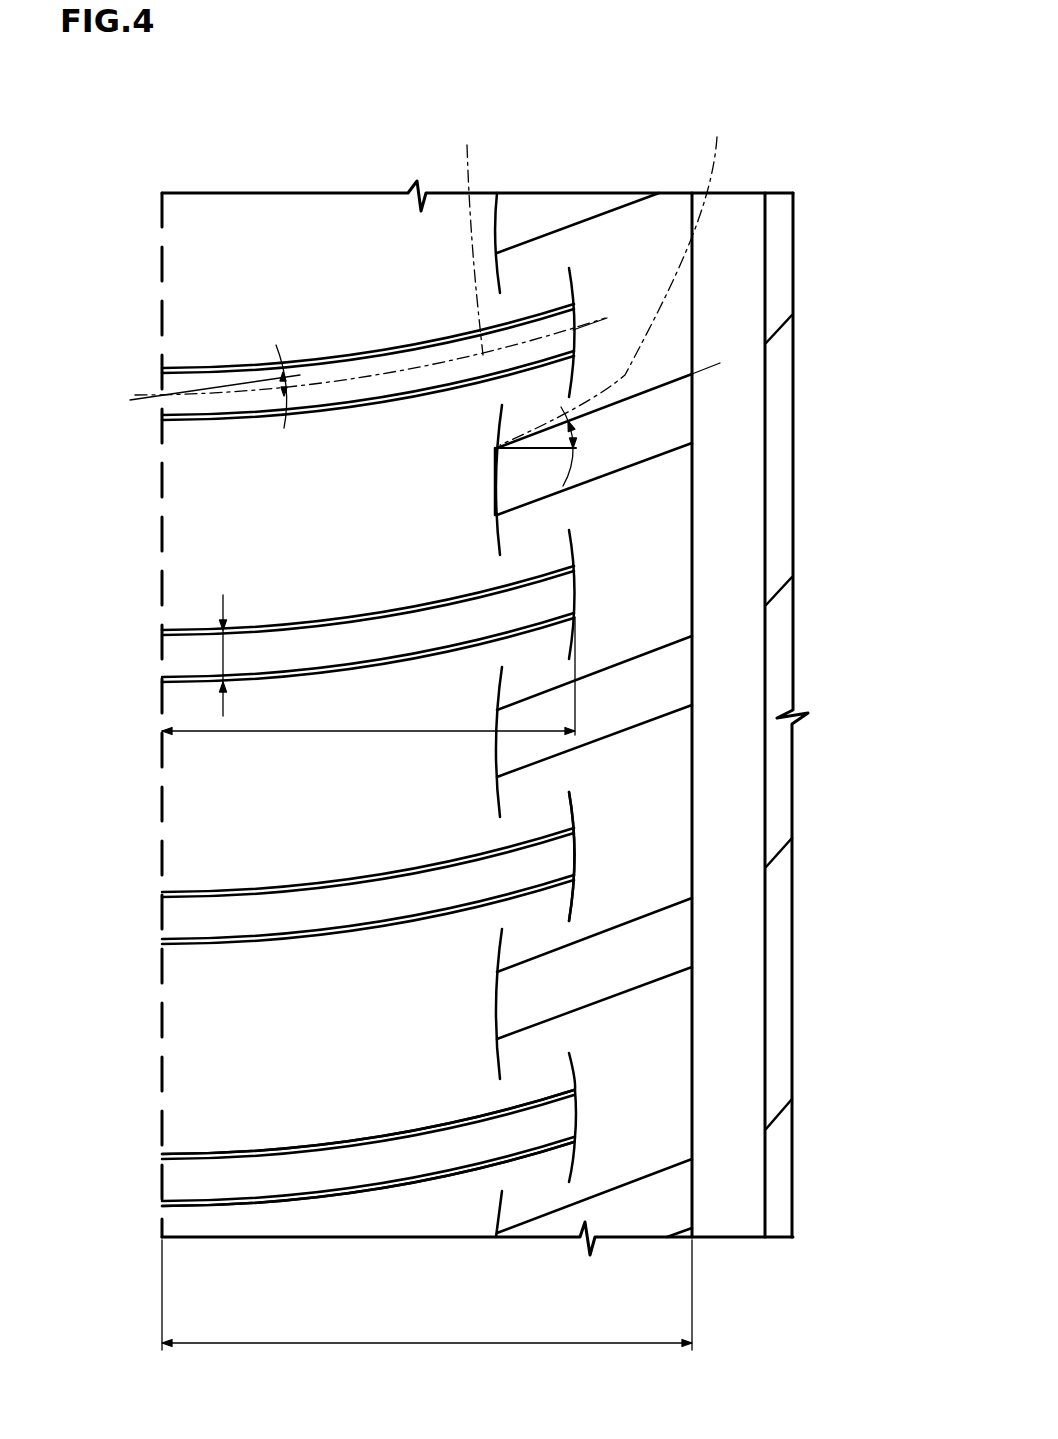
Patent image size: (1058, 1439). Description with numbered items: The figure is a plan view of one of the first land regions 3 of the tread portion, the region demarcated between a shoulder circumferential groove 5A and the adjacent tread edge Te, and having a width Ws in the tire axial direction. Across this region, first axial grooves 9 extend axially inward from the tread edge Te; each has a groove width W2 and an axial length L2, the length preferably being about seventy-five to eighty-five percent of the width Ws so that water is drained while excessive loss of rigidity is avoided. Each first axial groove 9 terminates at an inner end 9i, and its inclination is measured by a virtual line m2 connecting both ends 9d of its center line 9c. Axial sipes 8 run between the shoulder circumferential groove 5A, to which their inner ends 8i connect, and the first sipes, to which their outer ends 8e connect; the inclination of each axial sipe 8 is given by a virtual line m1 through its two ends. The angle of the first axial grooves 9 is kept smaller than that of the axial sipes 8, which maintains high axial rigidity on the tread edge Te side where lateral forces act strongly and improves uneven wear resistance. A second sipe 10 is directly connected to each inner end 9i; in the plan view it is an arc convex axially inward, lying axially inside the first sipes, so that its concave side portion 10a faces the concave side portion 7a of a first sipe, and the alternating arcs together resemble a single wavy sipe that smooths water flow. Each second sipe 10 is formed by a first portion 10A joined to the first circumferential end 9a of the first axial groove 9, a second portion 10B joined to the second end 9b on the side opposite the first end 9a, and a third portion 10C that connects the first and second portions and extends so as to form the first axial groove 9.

The first land region 3 is at (760, 130).
The tread edge Te is at (160, 212).
The shoulder circumferential groove 5A is at (728, 1212).
The first axial groove 9 is at (210, 918).
The first end of first axial groove 9a is at (575, 1117).
The groove edge 9b is at (575, 1138).
The center line of first axial groove 9c is at (400, 373).
The ends of center line 9d is at (162, 396).
The inner end of first axial groove 9i is at (575, 852).
The axial sipe 8 is at (608, 408).
The inner end of axial sipe 8i is at (692, 373).
The outer end of axial sipe 8e is at (497, 449).
The virtual line of axial sipe m1 is at (620, 279).
The virtual line of first axial groove m2 is at (468, 234).
The concave side portion of first sipe 7a is at (504, 1001).
The second sipe 10 is at (575, 897).
The first portion of second sipe 10A is at (575, 1070).
The second portion of second sipe 10B is at (575, 1163).
The third portion of second sipe 10C is at (575, 1105).
The concave side portion of second sipe 10a is at (556, 1118).
The groove width of first axial groove W2 is at (222, 656).
The length of first axial groove L2 is at (365, 733).
The width of first land region Ws is at (427, 1310).